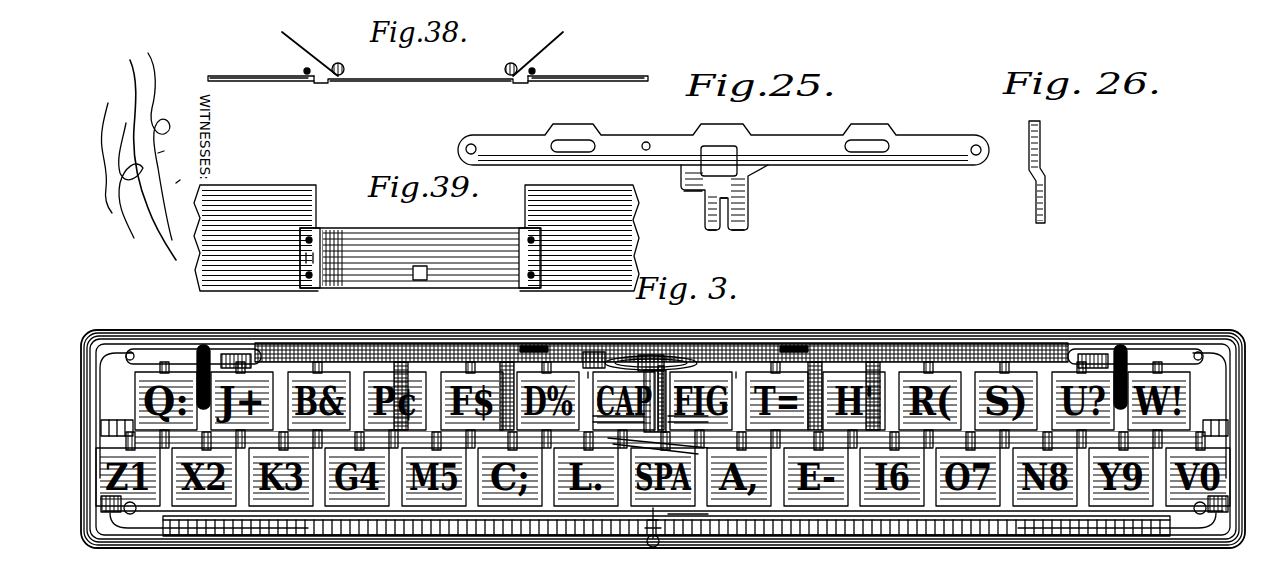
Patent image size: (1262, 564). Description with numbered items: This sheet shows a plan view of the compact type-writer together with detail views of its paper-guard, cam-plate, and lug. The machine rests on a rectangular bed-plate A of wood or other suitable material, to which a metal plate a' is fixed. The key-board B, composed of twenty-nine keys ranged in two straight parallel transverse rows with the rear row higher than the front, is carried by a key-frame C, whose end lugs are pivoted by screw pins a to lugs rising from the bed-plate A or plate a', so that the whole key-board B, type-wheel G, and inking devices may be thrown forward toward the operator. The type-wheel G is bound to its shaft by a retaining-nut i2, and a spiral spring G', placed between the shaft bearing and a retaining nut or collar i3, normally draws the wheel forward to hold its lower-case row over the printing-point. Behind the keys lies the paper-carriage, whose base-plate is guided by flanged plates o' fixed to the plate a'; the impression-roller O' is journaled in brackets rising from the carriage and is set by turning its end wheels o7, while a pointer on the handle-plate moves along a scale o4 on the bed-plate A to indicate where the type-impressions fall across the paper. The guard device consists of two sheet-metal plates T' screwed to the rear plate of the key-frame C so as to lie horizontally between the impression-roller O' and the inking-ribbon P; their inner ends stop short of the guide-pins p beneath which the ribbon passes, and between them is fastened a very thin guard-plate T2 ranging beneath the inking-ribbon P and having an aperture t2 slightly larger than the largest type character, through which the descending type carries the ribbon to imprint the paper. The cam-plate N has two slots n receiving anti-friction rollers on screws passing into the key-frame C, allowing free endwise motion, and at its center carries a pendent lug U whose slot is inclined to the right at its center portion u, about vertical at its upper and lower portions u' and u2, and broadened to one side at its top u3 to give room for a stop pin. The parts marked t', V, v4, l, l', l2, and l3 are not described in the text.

In FIG. 3, the bed-plate A is at (98, 330).
In FIG. 3, the screw pins a is at (659, 502).
In FIG. 3, the metal plate a' is at (675, 458).
In FIG. 3, the key-board B is at (298, 340).
In FIG. 3, the key-frame C is at (95, 422).
In FIG. 3, the impression-roller O' is at (664, 333).
In FIG. 3, the flanged guide-plates o' is at (598, 333).
In FIG. 3, the scale o4 is at (930, 548).
In FIG. 3, the end wheels o7 is at (196, 338).
In FIG. 38, the guard-plates T' is at (428, 62).
In FIG. 39, the guard-plates T' is at (416, 238).
In FIG. 3, the guard-plates T' is at (652, 367).
In FIG. 38, the guard-plate T2 is at (422, 75).
In FIG. 39, the guard-plate T2 is at (470, 246).
In FIG. 38, the rail stop t' is at (412, 90).
In FIG. 39, the rail stop t' is at (418, 258).
In FIG. 39, the aperture t2 is at (405, 262).
In FIG. 3, the guide post V is at (500, 360).
In FIG. 3, the guide slide v4 is at (528, 338).
In FIG. 3, the type-wheel G is at (651, 339).
In FIG. 3, the spiral spring G' is at (688, 514).
In FIG. 3, the retaining-nut i2 is at (662, 354).
In FIG. 3, the retaining nut or collar i3 is at (642, 540).
In FIG. 3, the lever l is at (658, 412).
In FIG. 3, the lever pin l' is at (663, 368).
In FIG. 3, the lever arm l2 is at (610, 432).
In FIG. 3, the lever arm l3 is at (694, 432).
In FIG. 38, the inking-ribbon P is at (322, 34).
In FIG. 38, the guide-pins p is at (338, 59).
In FIG. 25, the cam-plate N is at (907, 160).
In FIG. 26, the cam-plate N is at (1049, 172).
In FIG. 25, the slots n is at (720, 144).
In FIG. 25, the pendent lug U is at (742, 192).
In FIG. 26, the pendent lug U is at (1052, 202).
In FIG. 25, the inclined slot portion u is at (689, 197).
In FIG. 25, the upper slot portion u' is at (756, 184).
In FIG. 25, the lower slot portion u2 is at (712, 222).
In FIG. 25, the broadened slot top u3 is at (719, 161).